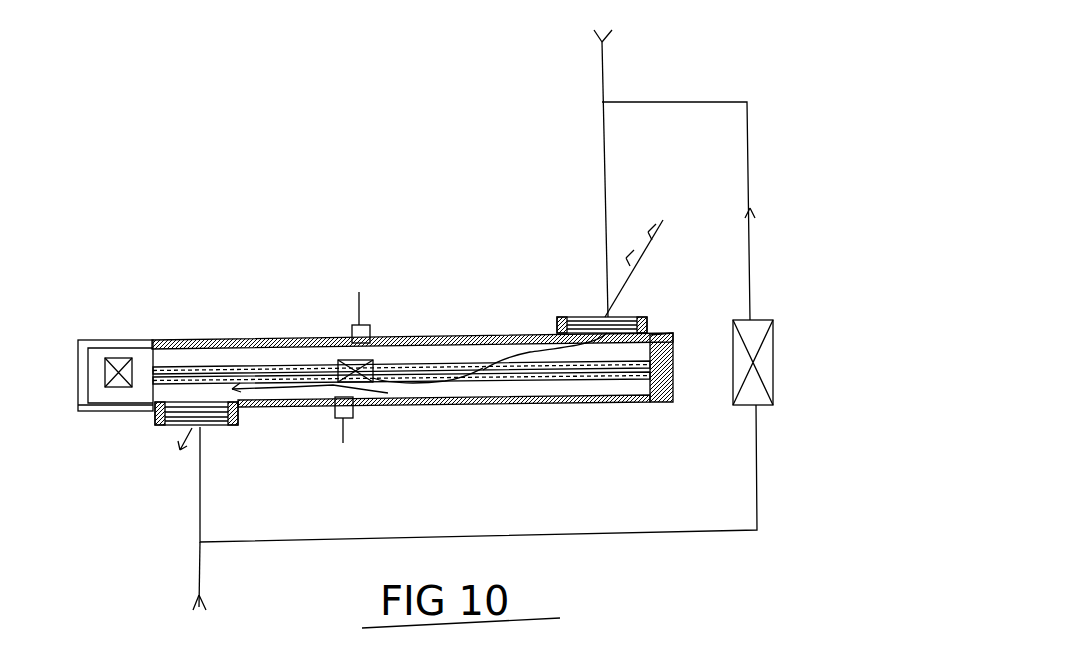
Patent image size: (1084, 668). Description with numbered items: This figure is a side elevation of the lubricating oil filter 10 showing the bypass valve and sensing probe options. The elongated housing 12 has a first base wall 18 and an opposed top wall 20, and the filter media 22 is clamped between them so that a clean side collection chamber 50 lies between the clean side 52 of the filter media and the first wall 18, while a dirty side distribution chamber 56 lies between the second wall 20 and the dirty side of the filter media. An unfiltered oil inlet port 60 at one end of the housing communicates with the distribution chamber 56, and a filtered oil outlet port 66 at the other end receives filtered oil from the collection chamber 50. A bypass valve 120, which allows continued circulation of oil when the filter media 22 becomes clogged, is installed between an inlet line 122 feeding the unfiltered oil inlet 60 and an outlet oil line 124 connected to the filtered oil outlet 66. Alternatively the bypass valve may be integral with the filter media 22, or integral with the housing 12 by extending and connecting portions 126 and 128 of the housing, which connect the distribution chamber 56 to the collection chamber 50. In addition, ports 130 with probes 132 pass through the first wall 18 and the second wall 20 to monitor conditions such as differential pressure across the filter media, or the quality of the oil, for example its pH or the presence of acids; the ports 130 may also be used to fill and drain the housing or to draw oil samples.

The lubricating oil filter 10 is at (495, 333).
The housing 12 is at (238, 288).
The first base wall 18 is at (194, 348).
The top wall 20 is at (605, 389).
The filter media 22 is at (343, 310).
The clean side collection chamber 50 is at (552, 385).
The clean side of the filter media 52 is at (512, 377).
The dirty side distribution chamber 56 is at (422, 333).
The unfiltered oil inlet port 60 is at (650, 318).
The filtered oil outlet port 66 is at (150, 420).
The bypass valve 120 is at (126, 358).
The inlet line 122 is at (602, 77).
The outlet oil line 124 is at (200, 527).
The housing portion 126 is at (78, 405).
The housing portion 128 is at (100, 340).
The port 130 is at (350, 325).
The probe 132 is at (372, 330).